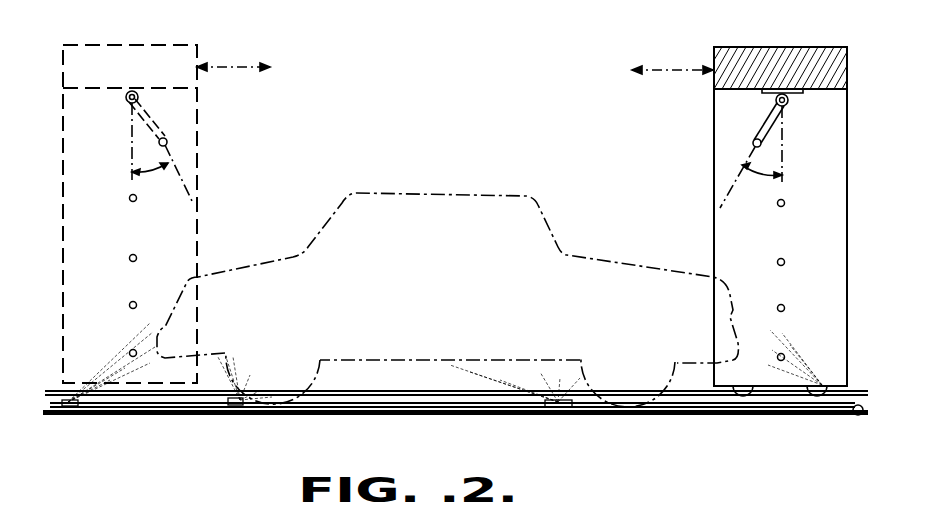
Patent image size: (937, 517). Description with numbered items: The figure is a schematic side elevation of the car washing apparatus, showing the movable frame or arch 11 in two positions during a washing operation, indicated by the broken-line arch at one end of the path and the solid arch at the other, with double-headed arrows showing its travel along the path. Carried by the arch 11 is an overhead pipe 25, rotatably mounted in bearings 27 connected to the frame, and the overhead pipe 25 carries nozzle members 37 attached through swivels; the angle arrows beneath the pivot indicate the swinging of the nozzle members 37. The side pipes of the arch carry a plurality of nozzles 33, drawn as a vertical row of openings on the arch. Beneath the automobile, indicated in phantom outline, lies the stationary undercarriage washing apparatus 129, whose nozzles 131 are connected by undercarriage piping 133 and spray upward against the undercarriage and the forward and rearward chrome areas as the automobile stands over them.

The frame or arch 11 is at (751, 47).
The overhead pipe 25 is at (788, 105).
The bearings 27 is at (797, 97).
The nozzles 33 is at (778, 207).
The nozzle members 37 is at (755, 140).
The stationary undercarriage washing apparatus 129 is at (402, 407).
The nozzles 131 is at (73, 406).
The undercarriage piping 133 is at (178, 410).